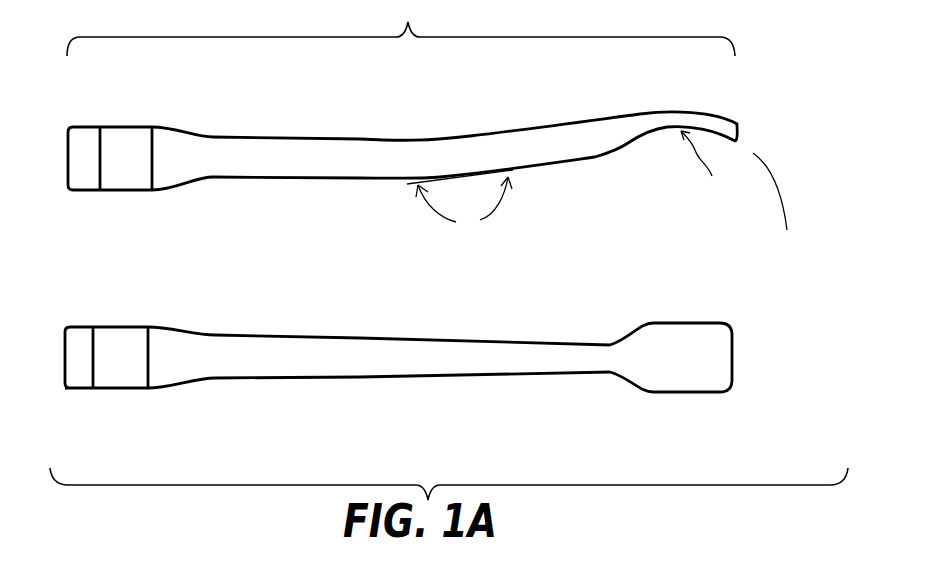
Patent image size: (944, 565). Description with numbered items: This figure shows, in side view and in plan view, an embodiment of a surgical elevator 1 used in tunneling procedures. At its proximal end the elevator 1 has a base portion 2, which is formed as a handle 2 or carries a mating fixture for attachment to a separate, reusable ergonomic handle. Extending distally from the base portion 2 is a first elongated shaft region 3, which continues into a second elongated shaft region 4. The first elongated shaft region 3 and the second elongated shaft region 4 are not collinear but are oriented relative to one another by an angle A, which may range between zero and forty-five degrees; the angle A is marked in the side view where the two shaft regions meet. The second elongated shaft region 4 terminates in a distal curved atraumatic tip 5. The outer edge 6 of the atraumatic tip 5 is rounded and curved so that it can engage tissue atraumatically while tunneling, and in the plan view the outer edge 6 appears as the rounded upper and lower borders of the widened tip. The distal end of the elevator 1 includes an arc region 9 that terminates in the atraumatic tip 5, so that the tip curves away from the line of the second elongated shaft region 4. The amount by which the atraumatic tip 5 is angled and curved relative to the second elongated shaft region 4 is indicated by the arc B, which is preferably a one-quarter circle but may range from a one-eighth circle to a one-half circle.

The elevator 1 is at (408, 12).
The base portion 2 is at (85, 178).
The first elongated shaft region 3 is at (214, 165).
The second elongated shaft region 4 is at (630, 148).
The atraumatic tip 5 is at (703, 111).
The outer edge 6 is at (700, 323).
The arc region 9 is at (703, 166).
The angle A is at (460, 202).
The arc B is at (786, 200).